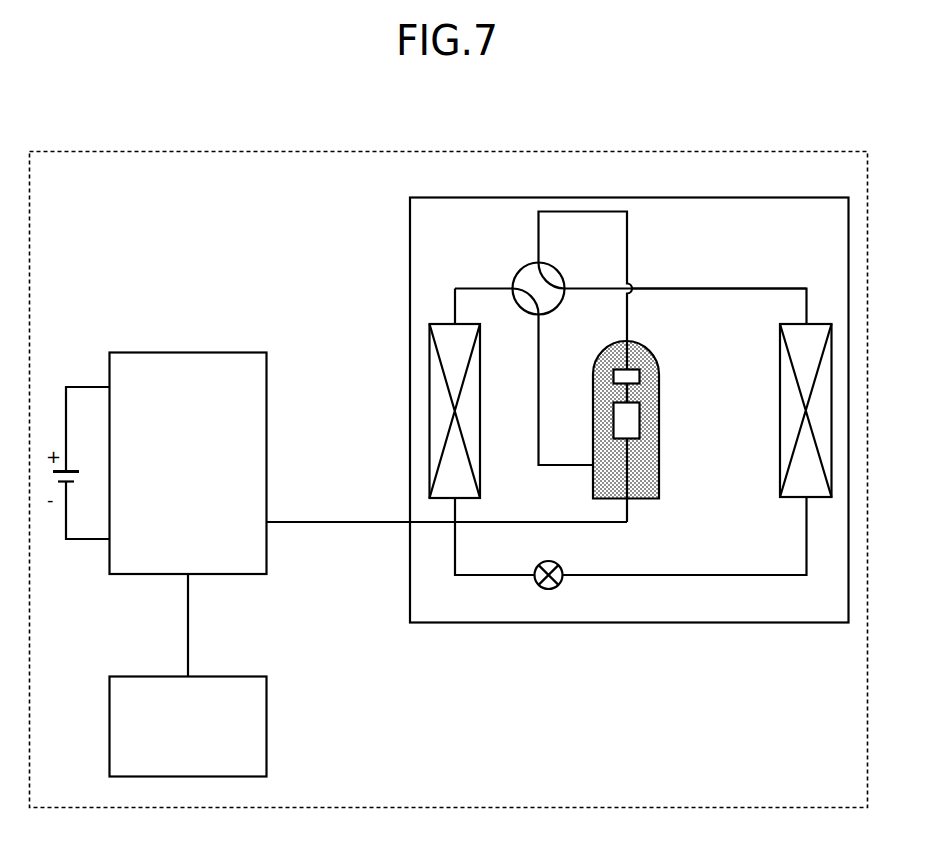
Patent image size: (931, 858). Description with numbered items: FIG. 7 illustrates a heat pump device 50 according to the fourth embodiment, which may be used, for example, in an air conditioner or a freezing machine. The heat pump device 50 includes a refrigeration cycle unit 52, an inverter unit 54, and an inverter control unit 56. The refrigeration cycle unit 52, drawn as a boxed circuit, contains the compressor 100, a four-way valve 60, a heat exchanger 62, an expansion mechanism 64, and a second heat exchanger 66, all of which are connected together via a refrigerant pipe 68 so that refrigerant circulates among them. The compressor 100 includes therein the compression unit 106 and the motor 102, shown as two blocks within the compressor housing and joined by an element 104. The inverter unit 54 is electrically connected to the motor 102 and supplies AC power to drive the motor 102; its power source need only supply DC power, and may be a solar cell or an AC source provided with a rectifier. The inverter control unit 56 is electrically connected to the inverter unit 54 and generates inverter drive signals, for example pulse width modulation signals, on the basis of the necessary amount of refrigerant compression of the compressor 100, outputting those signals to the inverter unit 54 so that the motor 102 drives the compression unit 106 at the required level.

The heat pump device 50 is at (801, 127).
The refrigeration cycle unit 52 is at (763, 178).
The inverter unit 54 is at (238, 352).
The inverter control unit 56 is at (239, 677).
The four-way valve 60 is at (521, 270).
The heat exchanger 62 is at (437, 324).
The expansion mechanism 64 is at (559, 566).
The heat exchanger 66 is at (780, 334).
The refrigerant pipe 68 is at (700, 288).
The compressor 100 is at (639, 432).
The motor 102 is at (640, 420).
The shaft 104 is at (621, 397).
The compression unit 106 is at (640, 376).